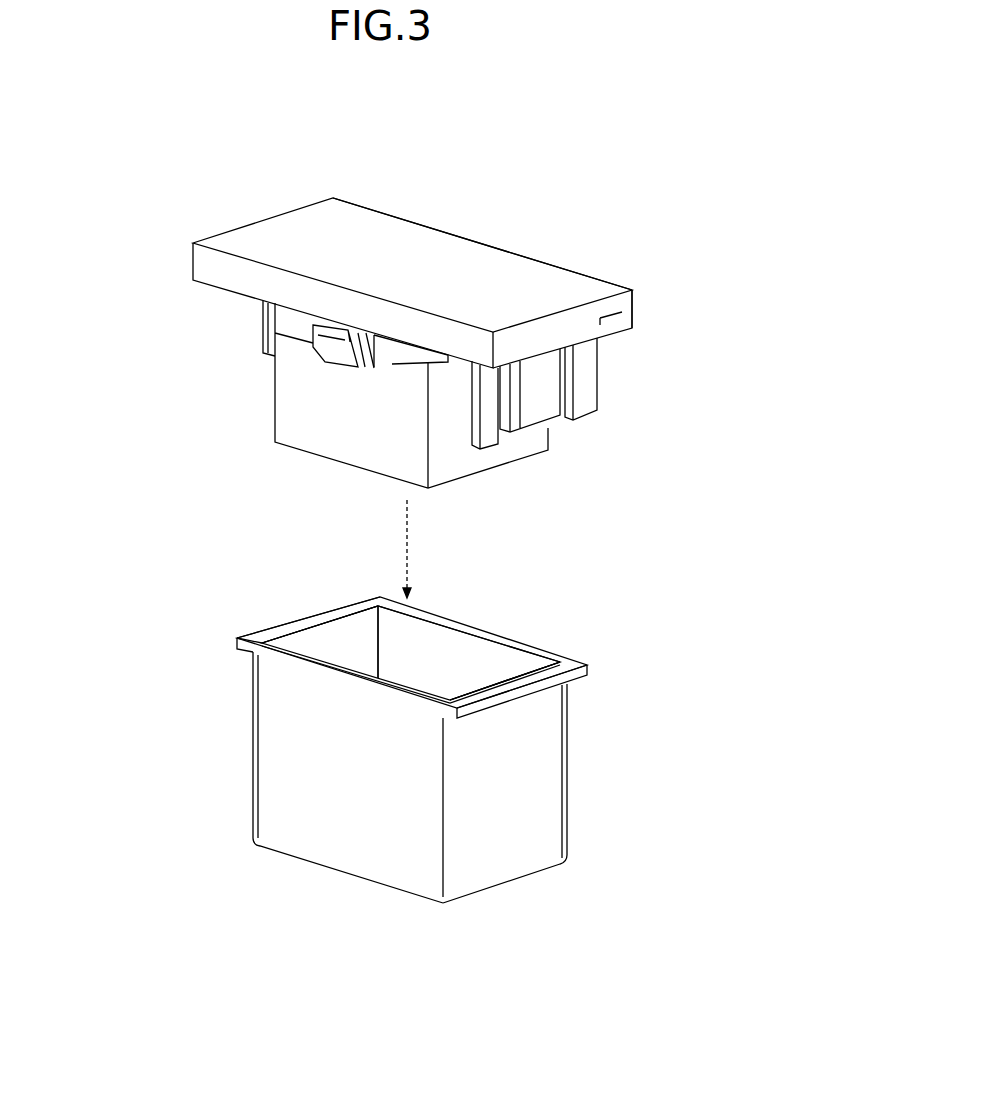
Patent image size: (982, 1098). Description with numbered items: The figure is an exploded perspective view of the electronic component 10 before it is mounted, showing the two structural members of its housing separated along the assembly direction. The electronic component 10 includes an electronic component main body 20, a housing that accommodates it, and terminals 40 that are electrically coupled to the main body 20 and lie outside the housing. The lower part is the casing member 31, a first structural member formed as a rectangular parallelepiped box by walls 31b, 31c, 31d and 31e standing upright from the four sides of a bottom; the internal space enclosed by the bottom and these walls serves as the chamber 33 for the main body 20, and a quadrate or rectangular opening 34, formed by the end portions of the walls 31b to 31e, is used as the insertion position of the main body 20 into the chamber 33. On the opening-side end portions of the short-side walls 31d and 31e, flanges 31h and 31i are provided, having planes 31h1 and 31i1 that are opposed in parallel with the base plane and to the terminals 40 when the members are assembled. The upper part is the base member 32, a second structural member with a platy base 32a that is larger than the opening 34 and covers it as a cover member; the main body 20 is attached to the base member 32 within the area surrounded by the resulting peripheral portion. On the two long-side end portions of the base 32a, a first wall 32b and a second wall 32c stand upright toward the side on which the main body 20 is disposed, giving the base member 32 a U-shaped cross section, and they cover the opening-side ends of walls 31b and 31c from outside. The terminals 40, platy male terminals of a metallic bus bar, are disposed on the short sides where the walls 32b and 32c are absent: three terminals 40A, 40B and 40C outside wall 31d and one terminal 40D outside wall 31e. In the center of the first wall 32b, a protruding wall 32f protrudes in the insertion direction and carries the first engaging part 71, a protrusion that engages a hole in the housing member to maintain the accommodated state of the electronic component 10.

The electronic component 10 is at (95, 169).
The electronic component main body 20 is at (334, 445).
The casing member 31 is at (225, 597).
The wall 31b is at (287, 750).
The wall 31c is at (513, 663).
The wall 31d is at (537, 770).
The wall 31e is at (333, 637).
The flange 31h is at (587, 667).
The plane 31h1 is at (532, 673).
The flange 31i is at (233, 643).
The plane 31i1 is at (312, 612).
The base member 32 is at (645, 149).
The base 32a is at (537, 287).
The first wall 32b is at (452, 357).
The second wall 32c is at (632, 322).
The protruding wall 32f is at (395, 340).
The chamber 33 is at (435, 650).
The opening 34 is at (280, 640).
The terminal 40 is at (452, 393).
The terminal 40A is at (485, 422).
The terminal 40B is at (537, 400).
The terminal 40C is at (582, 365).
The terminal 40D is at (263, 347).
The first engaging part 71 is at (272, 360).